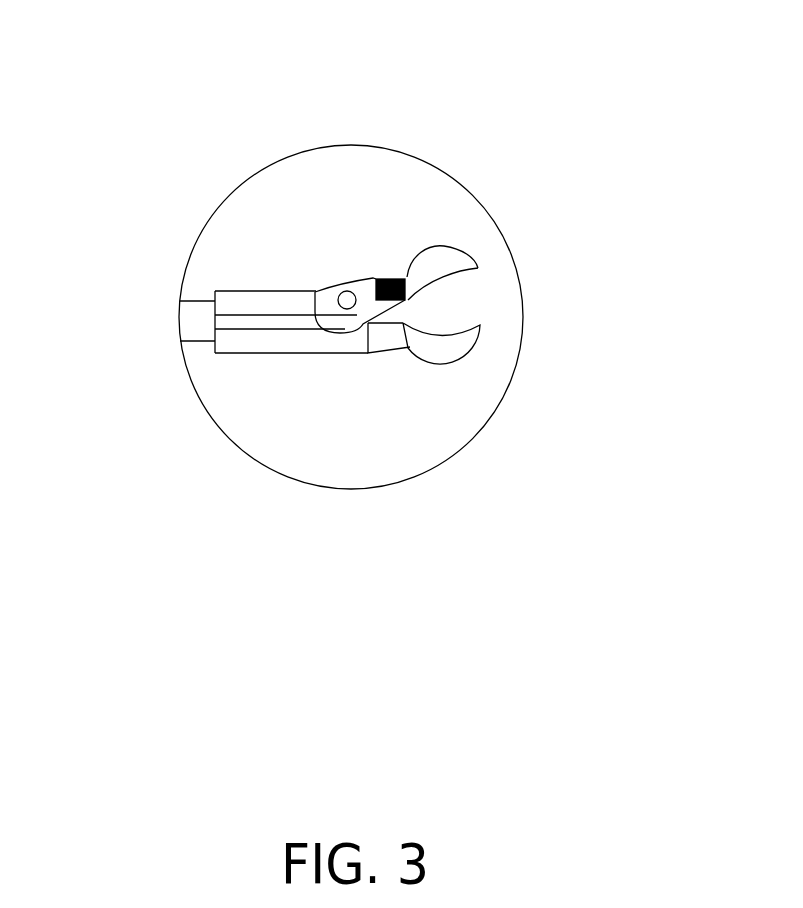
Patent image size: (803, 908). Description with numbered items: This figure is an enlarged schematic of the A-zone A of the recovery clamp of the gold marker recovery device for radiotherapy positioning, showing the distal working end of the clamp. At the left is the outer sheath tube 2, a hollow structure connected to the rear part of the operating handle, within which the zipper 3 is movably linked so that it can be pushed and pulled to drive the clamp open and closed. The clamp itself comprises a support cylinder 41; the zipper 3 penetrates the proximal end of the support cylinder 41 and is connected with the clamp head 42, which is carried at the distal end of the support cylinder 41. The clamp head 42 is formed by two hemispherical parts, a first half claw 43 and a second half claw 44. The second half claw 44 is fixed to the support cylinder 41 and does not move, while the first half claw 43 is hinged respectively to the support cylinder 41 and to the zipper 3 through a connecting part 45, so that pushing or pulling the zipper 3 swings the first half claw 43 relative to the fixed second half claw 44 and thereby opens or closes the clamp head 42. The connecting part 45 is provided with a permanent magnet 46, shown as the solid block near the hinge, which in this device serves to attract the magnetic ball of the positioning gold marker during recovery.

The outer sheath tube 2 is at (195, 330).
The zipper 3 is at (232, 323).
The support cylinder 41 is at (288, 302).
The clamp head 42 is at (428, 238).
The first half claw 43 is at (445, 267).
The second half claw 44 is at (440, 347).
The connecting part 45 is at (365, 310).
The permanent magnet 46 is at (387, 277).
The A-zone A is at (522, 333).